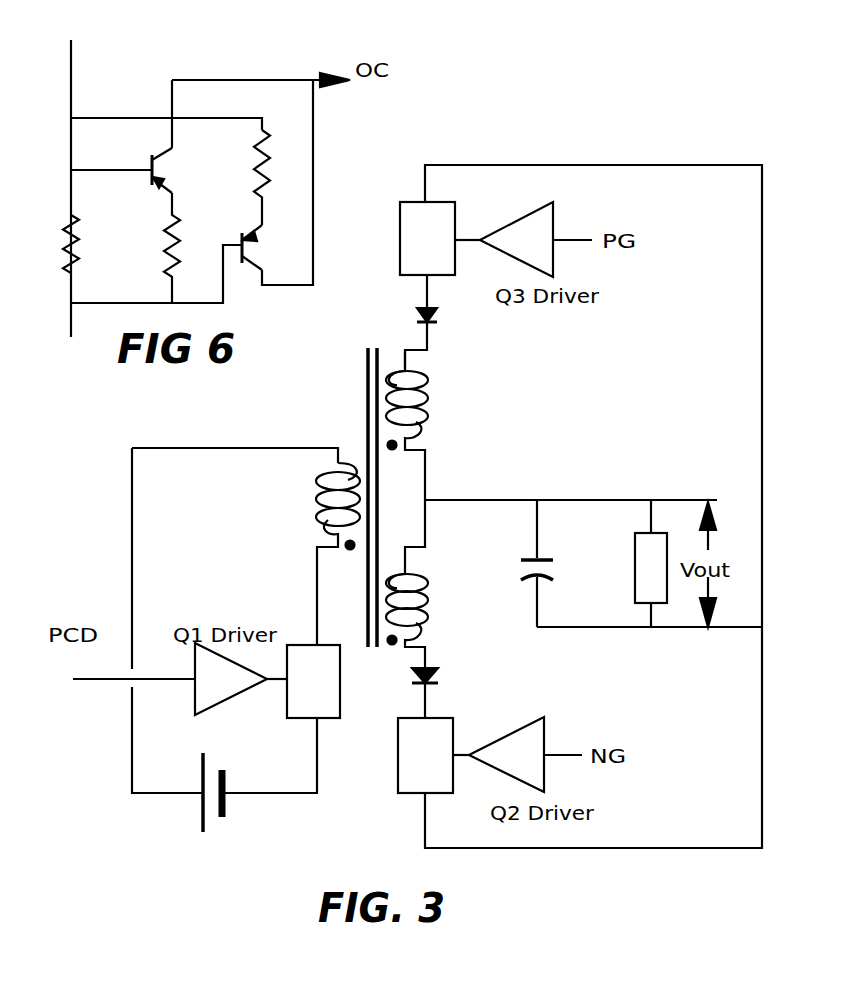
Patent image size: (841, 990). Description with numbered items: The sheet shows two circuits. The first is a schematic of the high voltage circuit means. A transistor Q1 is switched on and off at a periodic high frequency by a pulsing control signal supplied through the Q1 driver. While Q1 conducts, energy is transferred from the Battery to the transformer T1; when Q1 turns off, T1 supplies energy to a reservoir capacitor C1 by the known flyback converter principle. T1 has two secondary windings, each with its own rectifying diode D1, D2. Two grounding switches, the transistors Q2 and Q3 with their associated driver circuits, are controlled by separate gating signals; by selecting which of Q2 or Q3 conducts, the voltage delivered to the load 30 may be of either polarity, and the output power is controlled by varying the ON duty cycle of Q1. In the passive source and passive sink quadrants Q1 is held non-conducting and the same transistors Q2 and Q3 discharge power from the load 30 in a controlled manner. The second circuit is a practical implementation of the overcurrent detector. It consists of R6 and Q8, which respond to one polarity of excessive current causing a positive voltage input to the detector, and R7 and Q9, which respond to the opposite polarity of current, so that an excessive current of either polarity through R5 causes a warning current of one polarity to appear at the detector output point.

In FIG. 3, the load 30 is at (643, 545).
In FIG. 3, the reservoir capacitor C1 is at (554, 563).
In FIG. 3, the transformer T1 is at (372, 508).
In FIG. 3, the rectifying diode D1 is at (441, 693).
In FIG. 3, the rectifying diode D2 is at (438, 322).
In FIG. 3, the transistor Q1 is at (313, 681).
In FIG. 3, the transistor Q2 is at (425, 755).
In FIG. 3, the transistor Q3 is at (427, 238).
In FIG. 3, the battery Battery is at (258, 792).
In FIG. 6, the resistor R5 is at (48, 244).
In FIG. 6, the resistor R6 is at (148, 248).
In FIG. 6, the resistor R7 is at (278, 177).
In FIG. 6, the transistor Q8 is at (121, 163).
In FIG. 6, the transistor Q9 is at (227, 240).